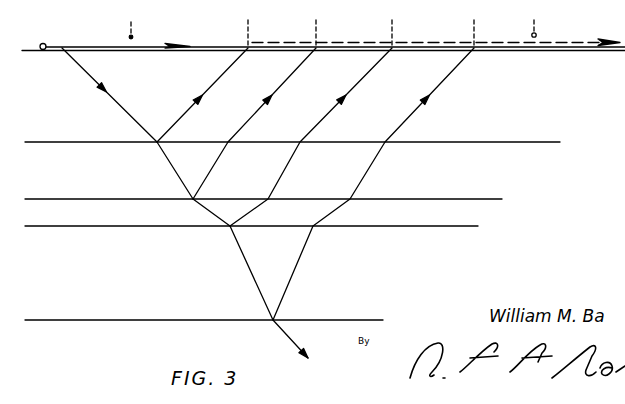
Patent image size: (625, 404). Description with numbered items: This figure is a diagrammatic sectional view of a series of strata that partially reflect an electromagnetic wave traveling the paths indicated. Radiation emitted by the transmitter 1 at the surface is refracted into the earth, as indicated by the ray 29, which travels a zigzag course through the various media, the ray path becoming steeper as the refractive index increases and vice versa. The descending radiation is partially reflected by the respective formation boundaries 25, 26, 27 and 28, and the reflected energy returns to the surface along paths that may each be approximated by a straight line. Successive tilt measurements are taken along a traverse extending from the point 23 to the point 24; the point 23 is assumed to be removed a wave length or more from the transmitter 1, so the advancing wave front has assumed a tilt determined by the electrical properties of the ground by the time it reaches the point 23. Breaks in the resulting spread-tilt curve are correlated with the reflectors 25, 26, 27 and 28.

The transmitter 1 is at (48, 41).
The point 23 is at (136, 34).
The point 24 is at (538, 32).
The formation boundary 25 is at (152, 146).
The formation boundary 26 is at (179, 201).
The formation boundary 27 is at (222, 229).
The formation boundary 28 is at (267, 323).
The ray 29 is at (85, 70).